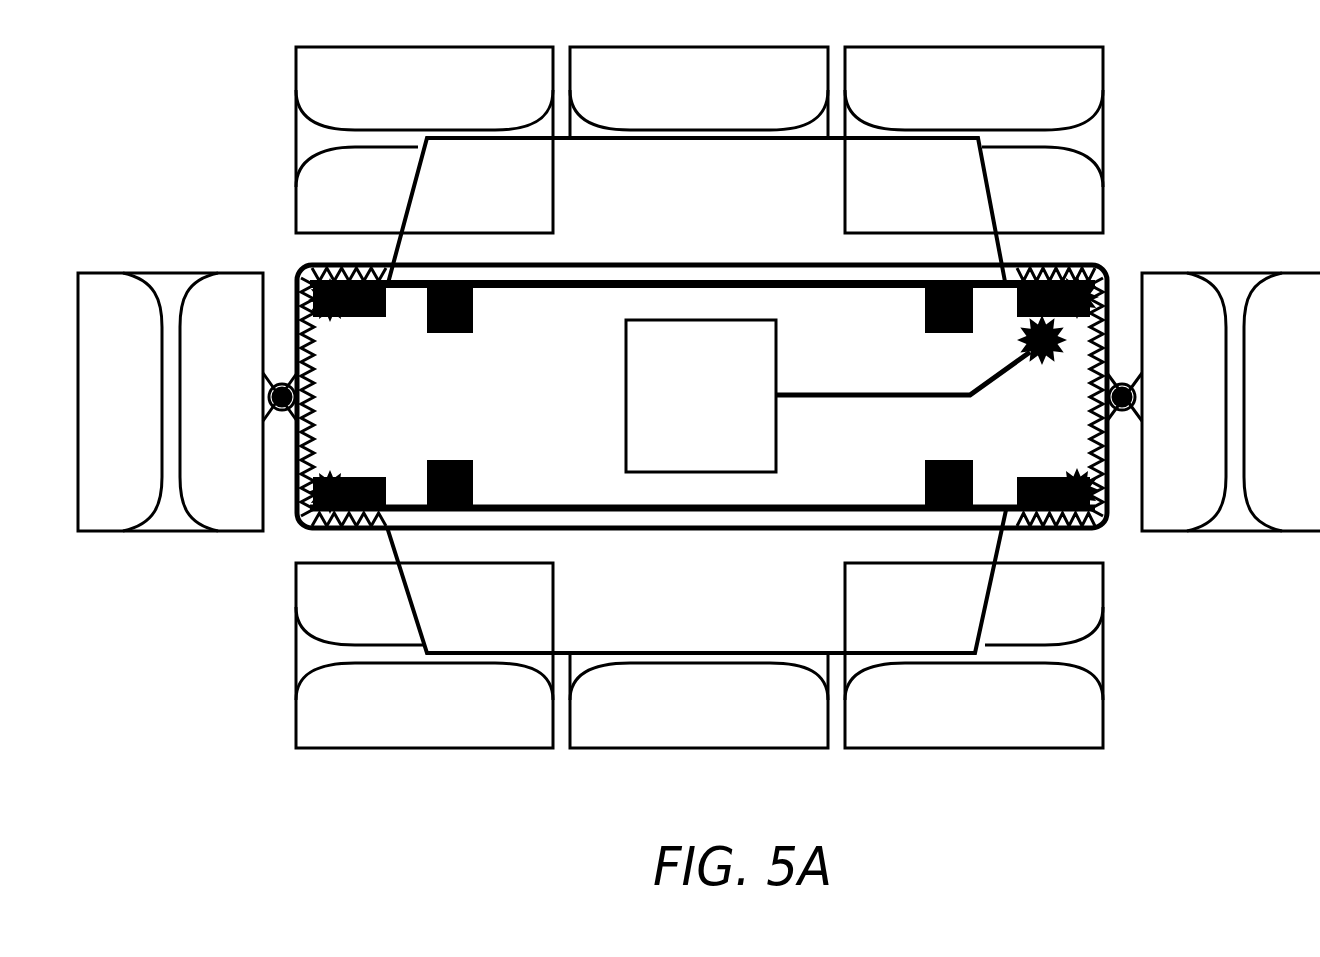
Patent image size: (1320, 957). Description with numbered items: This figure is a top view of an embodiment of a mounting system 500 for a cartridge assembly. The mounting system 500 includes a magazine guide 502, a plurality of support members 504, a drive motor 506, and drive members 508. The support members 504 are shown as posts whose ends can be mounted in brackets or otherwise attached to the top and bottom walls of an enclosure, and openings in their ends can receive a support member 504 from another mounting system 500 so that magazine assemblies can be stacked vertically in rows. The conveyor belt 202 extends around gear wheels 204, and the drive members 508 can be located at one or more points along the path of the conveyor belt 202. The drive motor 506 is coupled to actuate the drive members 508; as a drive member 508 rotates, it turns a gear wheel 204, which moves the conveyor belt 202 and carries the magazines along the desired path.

The mounting system 500 is at (1180, 128).
The conveyor belt 202 is at (1088, 263).
The gear wheel 204 is at (1102, 280).
The magazine guide 502 is at (582, 289).
The support member 504 is at (448, 335).
The drive motor 506 is at (670, 461).
The drive member 508 is at (1043, 368).